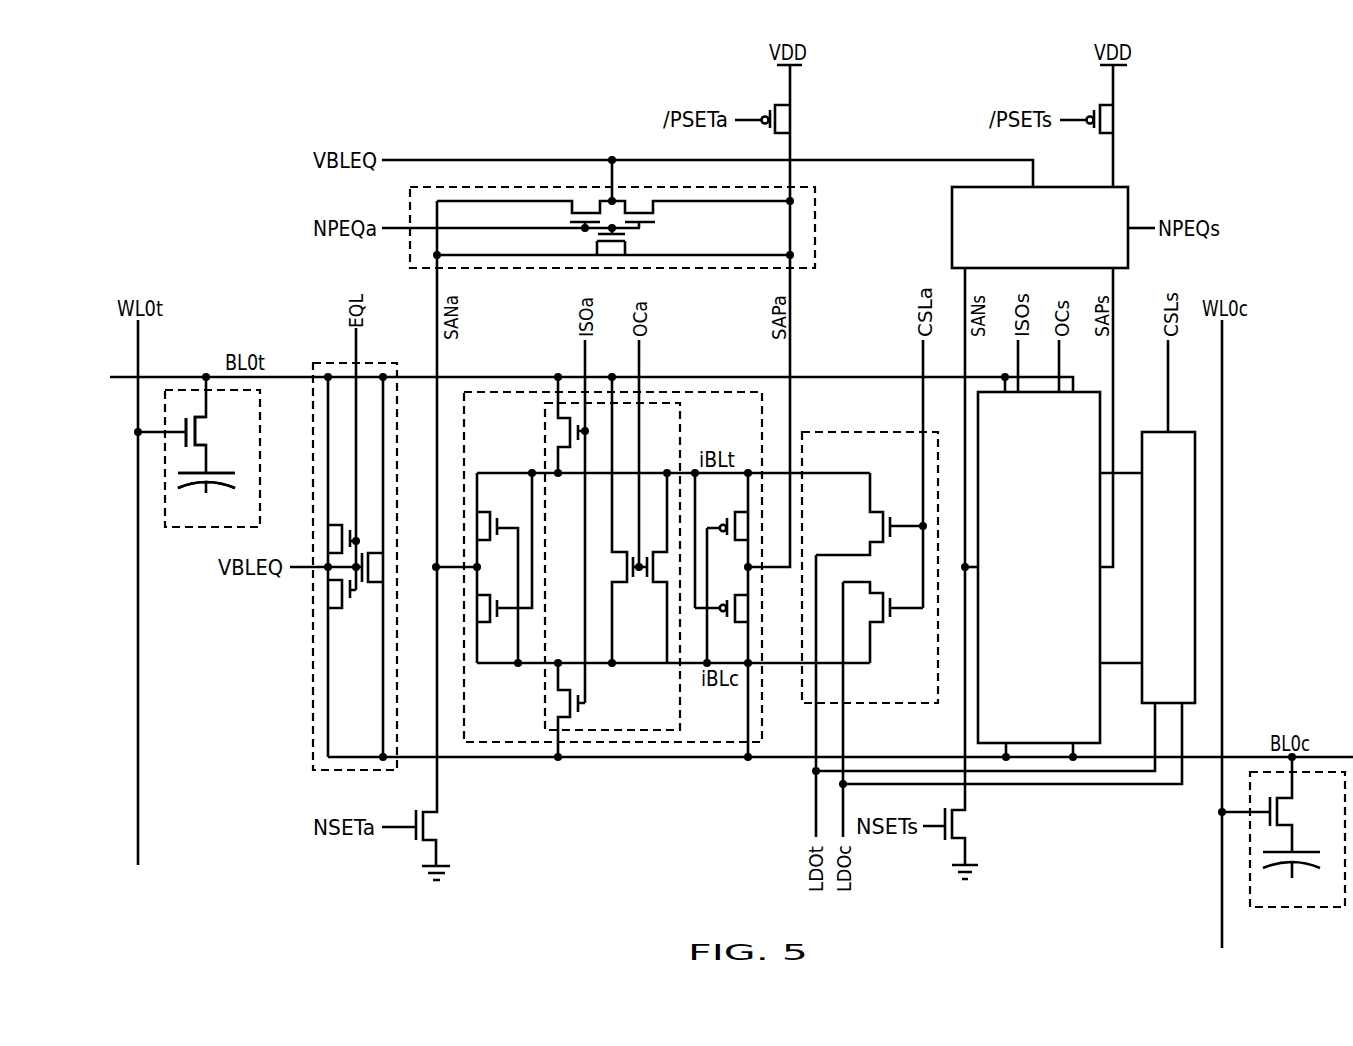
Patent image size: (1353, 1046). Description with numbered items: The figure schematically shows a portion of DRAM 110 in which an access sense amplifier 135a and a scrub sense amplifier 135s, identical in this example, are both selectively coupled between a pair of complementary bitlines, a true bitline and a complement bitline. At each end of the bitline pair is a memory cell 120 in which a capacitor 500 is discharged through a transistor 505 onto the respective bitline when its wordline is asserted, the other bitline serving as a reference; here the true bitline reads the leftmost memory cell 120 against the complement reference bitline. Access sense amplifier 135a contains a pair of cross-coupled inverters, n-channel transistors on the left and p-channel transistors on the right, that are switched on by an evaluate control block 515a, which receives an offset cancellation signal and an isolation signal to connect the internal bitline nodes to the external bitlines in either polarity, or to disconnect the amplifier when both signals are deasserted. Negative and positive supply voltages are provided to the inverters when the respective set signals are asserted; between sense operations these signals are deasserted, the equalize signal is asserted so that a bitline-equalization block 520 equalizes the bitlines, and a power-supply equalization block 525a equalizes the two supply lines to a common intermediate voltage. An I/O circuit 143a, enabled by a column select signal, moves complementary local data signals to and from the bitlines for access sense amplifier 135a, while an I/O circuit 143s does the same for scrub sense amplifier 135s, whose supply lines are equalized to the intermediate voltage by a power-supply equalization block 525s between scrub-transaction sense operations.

The DRAM 110 is at (257, 97).
The memory cell 120 is at (183, 524).
The transistor 505 is at (206, 440).
The capacitor 500 is at (210, 470).
The bitline-equalization block 520 is at (339, 700).
The power-supply equalization block 525a is at (687, 242).
The power-supply equalization block 525s is at (1020, 242).
The access sense amplifier 135a is at (483, 432).
The evaluate control block 515a is at (600, 722).
The I/O circuit 143a is at (883, 694).
The scrub sense amplifier 135s is at (1020, 607).
The I/O circuit 143s is at (1148, 592).